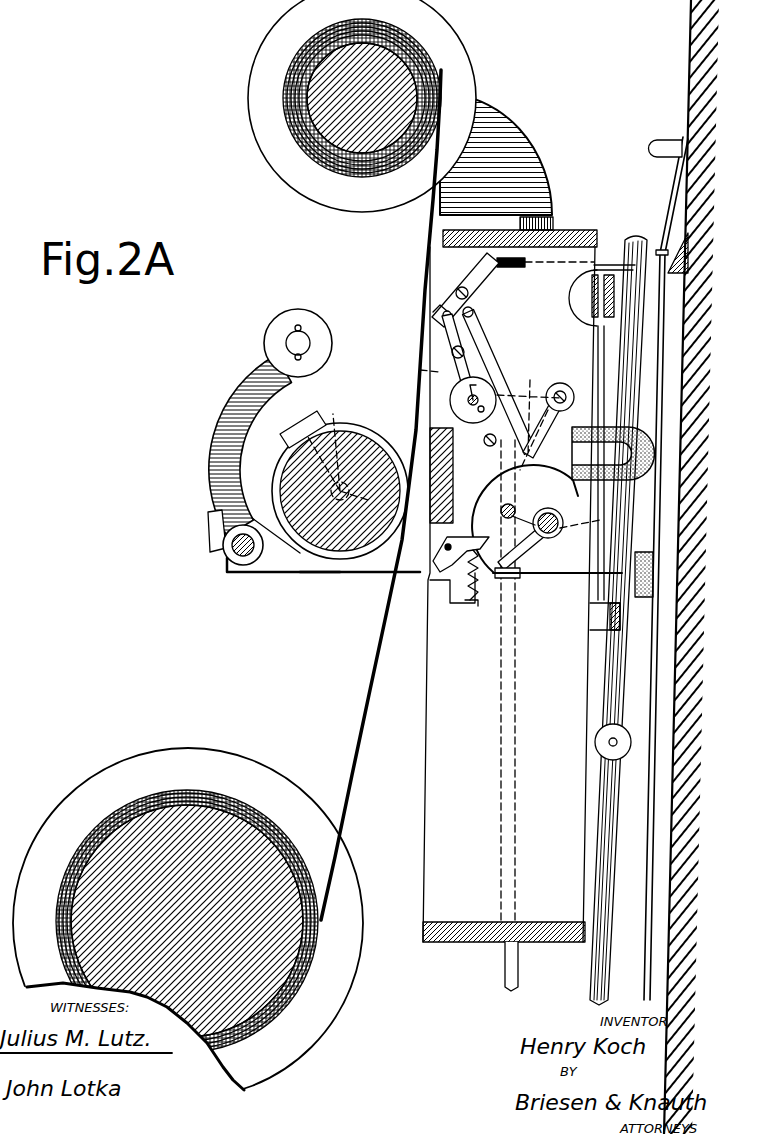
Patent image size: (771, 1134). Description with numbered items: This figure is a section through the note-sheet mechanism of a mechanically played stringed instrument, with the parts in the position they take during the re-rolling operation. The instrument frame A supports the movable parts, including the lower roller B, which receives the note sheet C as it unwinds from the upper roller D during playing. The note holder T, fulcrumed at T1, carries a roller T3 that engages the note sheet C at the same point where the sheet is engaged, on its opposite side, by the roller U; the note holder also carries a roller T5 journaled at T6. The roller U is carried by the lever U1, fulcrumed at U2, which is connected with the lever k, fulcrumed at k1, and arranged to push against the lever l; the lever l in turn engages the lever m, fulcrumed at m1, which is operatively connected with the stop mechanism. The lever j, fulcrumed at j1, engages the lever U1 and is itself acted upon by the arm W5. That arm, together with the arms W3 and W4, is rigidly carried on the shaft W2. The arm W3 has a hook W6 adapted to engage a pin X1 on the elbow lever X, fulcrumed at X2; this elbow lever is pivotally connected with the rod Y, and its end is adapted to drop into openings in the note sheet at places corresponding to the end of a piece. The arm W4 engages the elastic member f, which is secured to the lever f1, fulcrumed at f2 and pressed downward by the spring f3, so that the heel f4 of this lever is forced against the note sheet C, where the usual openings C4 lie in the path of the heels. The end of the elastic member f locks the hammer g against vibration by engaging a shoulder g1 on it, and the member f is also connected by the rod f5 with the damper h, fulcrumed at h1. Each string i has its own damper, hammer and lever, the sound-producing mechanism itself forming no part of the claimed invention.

The instrument frame A is at (498, 579).
The lower roller B is at (200, 752).
The note sheet C is at (290, 126).
The upper roller D is at (270, 90).
The rod Y is at (504, 968).
The note holder T is at (338, 424).
The fulcrum of note holder T1 is at (243, 568).
The roller T3 is at (278, 332).
The roller T5 is at (317, 422).
The journal of roller T⁵ T6 is at (320, 574).
The roller U is at (448, 400).
The lever U1 is at (440, 330).
The fulcrum of lever U' U2 is at (499, 381).
The openings in note sheet C4 is at (420, 370).
The lever k is at (478, 266).
The fulcrum of lever k k1 is at (470, 298).
The lever j is at (507, 346).
The fulcrum of lever j j1 is at (482, 446).
The elbow lever X is at (528, 415).
The pin X1 is at (540, 576).
The fulcrum of elbow lever X X2 is at (548, 407).
The lever l is at (609, 268).
The hammer g is at (606, 412).
The shoulder g1 is at (624, 543).
The strings i is at (650, 522).
The shaft W2 is at (588, 529).
The arm W3 is at (533, 549).
The arm W4 is at (563, 517).
The arm W5 is at (525, 505).
The hook W6 is at (497, 500).
The elastic member f is at (460, 570).
The lever f1 is at (450, 600).
The fulcrum of lever f' f2 is at (470, 538).
The spring f3 is at (456, 601).
The heel f4 is at (432, 556).
The rod f5 is at (565, 580).
The damper h is at (618, 620).
The fulcrum of damper h1 is at (600, 645).
The lever m is at (606, 755).
The fulcrum of lever m m1 is at (595, 740).